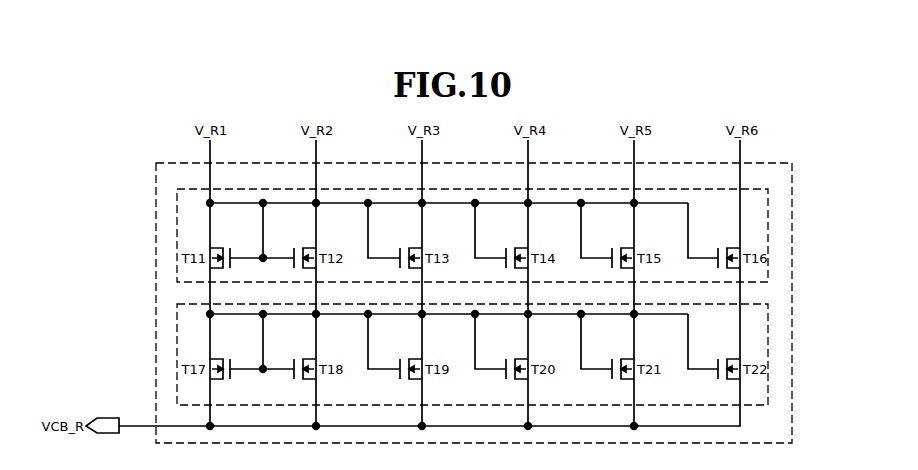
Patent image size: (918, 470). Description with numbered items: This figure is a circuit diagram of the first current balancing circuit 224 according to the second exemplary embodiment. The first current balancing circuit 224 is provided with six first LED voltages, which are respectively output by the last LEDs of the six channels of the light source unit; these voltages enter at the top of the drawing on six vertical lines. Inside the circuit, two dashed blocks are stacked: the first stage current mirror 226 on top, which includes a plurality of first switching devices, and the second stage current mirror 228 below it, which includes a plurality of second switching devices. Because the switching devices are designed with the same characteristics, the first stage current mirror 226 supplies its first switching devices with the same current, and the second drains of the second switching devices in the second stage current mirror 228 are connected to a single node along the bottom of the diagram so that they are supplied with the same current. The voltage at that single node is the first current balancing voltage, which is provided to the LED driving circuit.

The first current balancing circuit 224 is at (775, 163).
The first stage current mirror 226 is at (768, 218).
The second stage current mirror 228 is at (768, 352).